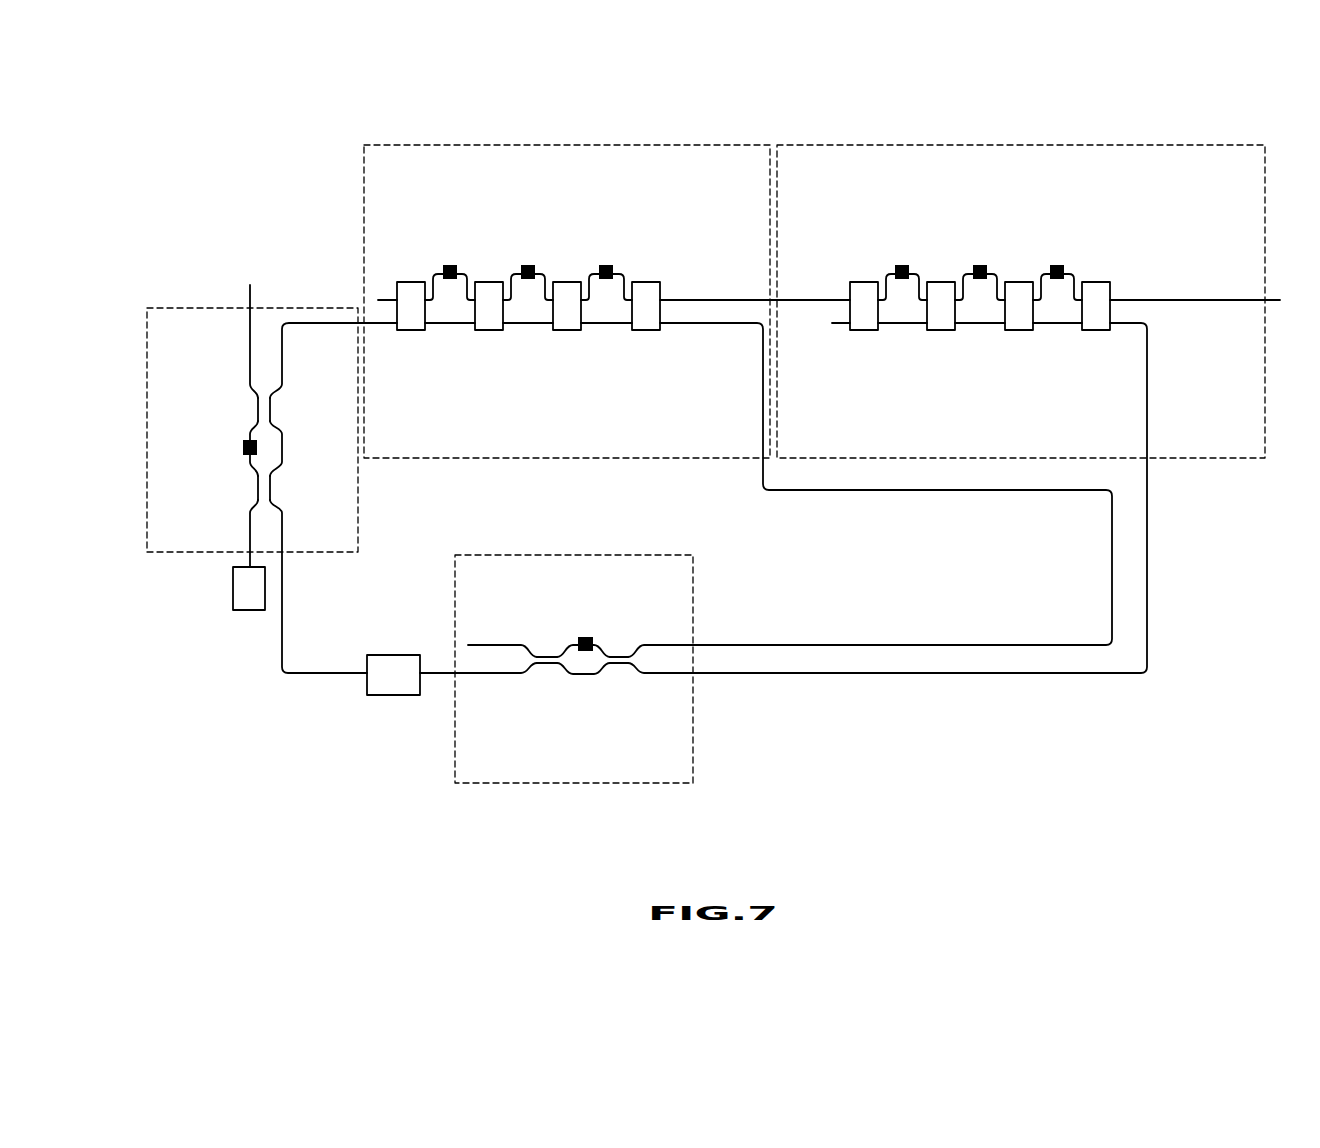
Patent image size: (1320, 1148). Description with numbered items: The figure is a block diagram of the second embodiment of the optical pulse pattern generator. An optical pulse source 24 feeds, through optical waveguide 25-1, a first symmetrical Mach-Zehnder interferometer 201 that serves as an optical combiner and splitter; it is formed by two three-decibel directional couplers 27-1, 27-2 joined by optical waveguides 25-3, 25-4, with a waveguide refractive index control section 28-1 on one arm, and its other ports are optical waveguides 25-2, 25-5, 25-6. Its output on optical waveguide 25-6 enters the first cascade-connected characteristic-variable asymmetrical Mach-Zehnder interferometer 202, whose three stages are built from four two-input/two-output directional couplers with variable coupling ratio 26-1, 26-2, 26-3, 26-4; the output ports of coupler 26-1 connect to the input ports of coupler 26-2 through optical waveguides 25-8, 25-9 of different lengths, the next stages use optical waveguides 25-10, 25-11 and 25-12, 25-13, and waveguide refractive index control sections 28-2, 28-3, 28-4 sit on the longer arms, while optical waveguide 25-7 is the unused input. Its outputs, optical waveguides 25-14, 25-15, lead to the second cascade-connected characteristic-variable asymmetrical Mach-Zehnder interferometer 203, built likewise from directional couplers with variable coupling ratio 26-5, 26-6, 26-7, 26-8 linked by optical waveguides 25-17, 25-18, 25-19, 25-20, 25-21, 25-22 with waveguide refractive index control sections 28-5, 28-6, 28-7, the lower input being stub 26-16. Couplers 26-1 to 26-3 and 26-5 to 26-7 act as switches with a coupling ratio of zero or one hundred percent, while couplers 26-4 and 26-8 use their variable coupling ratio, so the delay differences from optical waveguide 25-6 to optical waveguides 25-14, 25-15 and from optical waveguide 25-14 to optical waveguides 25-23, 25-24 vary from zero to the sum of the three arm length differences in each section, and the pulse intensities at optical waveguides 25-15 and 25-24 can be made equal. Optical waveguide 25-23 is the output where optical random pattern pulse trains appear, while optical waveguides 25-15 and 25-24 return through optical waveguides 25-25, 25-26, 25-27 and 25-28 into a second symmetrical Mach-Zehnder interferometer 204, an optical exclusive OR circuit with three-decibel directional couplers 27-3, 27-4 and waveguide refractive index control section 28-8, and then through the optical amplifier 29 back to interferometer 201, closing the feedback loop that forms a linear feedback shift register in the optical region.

The first symmetrical Mach-Zehnder interferometer 201 is at (197, 307).
The first cascade-connected characteristic-variable asymmetrical Mach-Zehnder interf 202 is at (437, 145).
The second cascade-connected characteristic-variable asymmetrical Mach-Zehnder inter 203 is at (905, 145).
The second symmetrical Mach-Zehnder interferometer 204 is at (695, 712).
The optical pulse source 24 is at (248, 612).
The optical amplifier 29 is at (392, 655).
The optical waveguide 25-1 is at (250, 535).
The optical waveguide 25-2 is at (282, 527).
The optical waveguide 25-3 is at (250, 465).
The optical waveguide 25-4 is at (282, 446).
The optical waveguide 25-5 is at (250, 353).
The optical waveguide 25-6 is at (284, 333).
The optical waveguide 25-7 is at (387, 300).
The optical waveguide 25-8 is at (436, 275).
The optical waveguide 25-9 is at (450, 325).
The optical waveguide 25-10 is at (514, 275).
The optical waveguide 25-11 is at (528, 325).
The optical waveguide 25-12 is at (592, 275).
The optical waveguide 25-13 is at (606, 325).
The optical waveguide 25-14 is at (716, 300).
The optical waveguide 25-15 is at (716, 325).
The optical waveguide 25-17 is at (888, 275).
The optical waveguide 25-18 is at (902, 325).
The optical waveguide 25-19 is at (966, 275).
The optical waveguide 25-20 is at (980, 325).
The optical waveguide 25-21 is at (1043, 275).
The optical waveguide 25-22 is at (1057, 325).
The optical waveguide 25-23 is at (1165, 300).
The optical waveguide 25-24 is at (1148, 355).
The optical waveguide 25-25 is at (612, 647).
The optical waveguide 25-26 is at (585, 674).
The optical waveguide 25-27 is at (494, 645).
The optical waveguide 25-28 is at (496, 673).
The directional coupler with variable coupling ratio 26-1 is at (411, 332).
The directional coupler with variable coupling ratio 26-2 is at (489, 332).
The directional coupler with variable coupling ratio 26-3 is at (567, 332).
The directional coupler with variable coupling ratio 26-4 is at (646, 332).
The directional coupler with variable coupling ratio 26-5 is at (863, 332).
The directional coupler with variable coupling ratio 26-6 is at (941, 332).
The directional coupler with variable coupling ratio 26-7 is at (1019, 332).
The directional coupler with variable coupling ratio 26-8 is at (1096, 332).
The optical waveguide input of second delay section 26-16 is at (840, 325).
The 3-dB directional coupler 27-1 is at (270, 489).
The 3-dB directional coupler 27-2 is at (270, 408).
The 3-dB directional coupler 27-3 is at (625, 663).
The 3-dB directional coupler 27-4 is at (545, 663).
The waveguide refractive index control section 28-1 is at (243, 448).
The waveguide refractive index control section 28-2 is at (450, 265).
The waveguide refractive index control section 28-3 is at (528, 265).
The waveguide refractive index control section 28-4 is at (606, 265).
The waveguide refractive index control section 28-5 is at (902, 265).
The waveguide refractive index control section 28-6 is at (980, 265).
The waveguide refractive index control section 28-7 is at (1057, 265).
The waveguide refractive index control section 28-8 is at (587, 637).